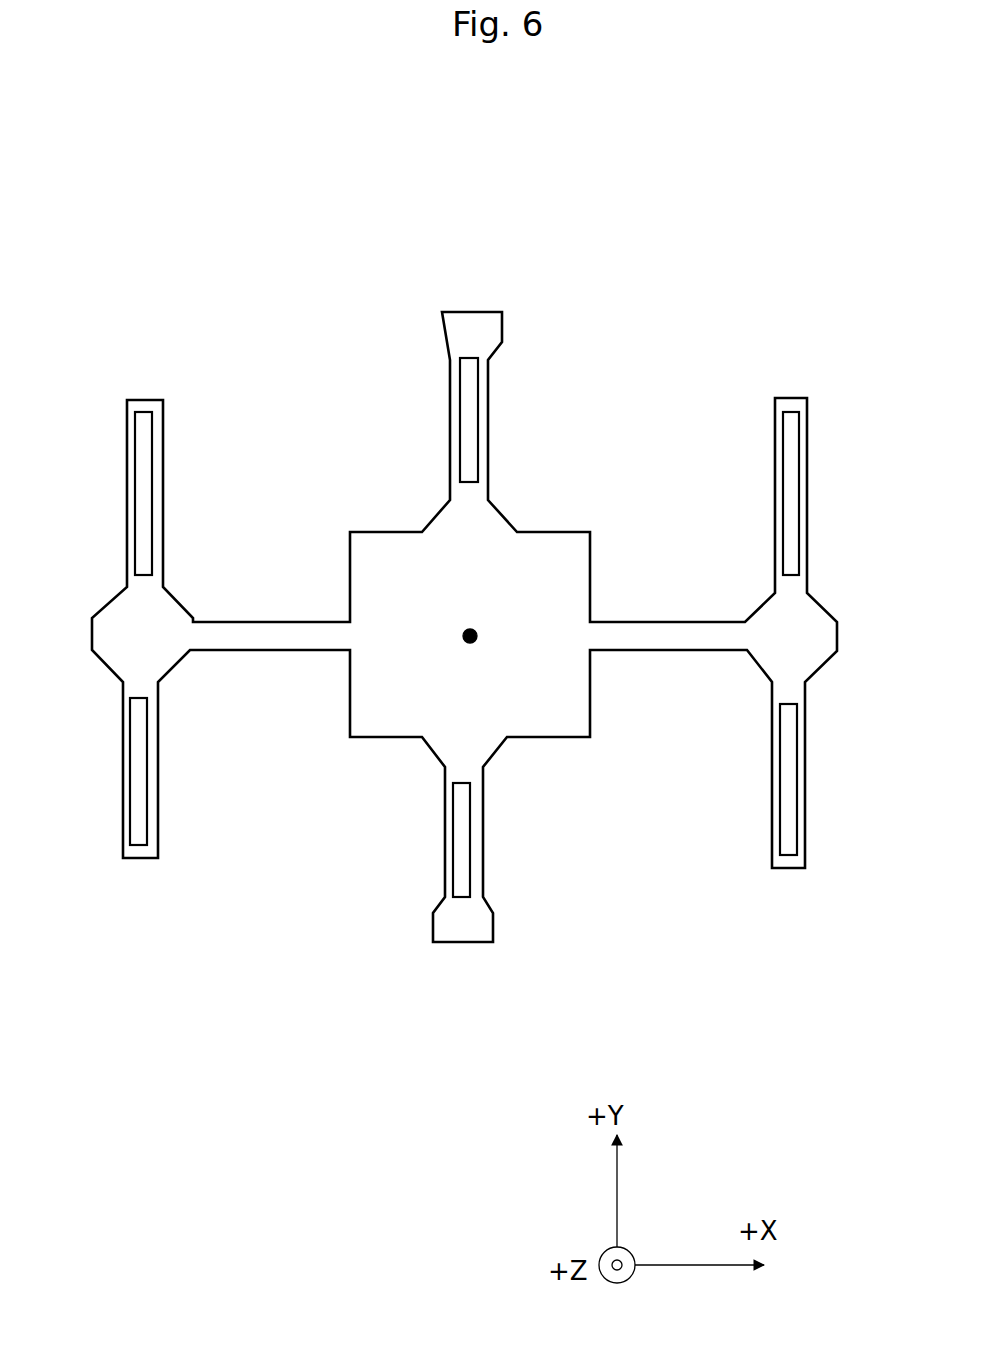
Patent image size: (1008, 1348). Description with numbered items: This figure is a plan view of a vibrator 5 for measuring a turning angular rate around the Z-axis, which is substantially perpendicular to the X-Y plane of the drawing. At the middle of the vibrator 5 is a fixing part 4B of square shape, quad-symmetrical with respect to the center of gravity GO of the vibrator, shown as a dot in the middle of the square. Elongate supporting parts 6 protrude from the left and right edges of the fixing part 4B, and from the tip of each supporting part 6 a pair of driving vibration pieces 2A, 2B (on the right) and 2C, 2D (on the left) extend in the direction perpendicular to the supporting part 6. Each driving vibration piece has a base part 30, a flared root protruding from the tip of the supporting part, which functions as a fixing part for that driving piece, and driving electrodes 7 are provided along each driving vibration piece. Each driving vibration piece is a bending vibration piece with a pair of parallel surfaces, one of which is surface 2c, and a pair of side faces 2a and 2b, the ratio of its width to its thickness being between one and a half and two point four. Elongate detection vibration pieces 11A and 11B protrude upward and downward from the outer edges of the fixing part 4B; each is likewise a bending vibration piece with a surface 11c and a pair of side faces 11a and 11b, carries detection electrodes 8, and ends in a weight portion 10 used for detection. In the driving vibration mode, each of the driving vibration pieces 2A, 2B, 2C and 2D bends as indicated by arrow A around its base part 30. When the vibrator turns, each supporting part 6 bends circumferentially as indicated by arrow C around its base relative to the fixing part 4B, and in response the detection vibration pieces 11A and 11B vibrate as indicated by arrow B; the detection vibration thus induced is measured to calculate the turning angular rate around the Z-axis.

The vibrator 5 is at (632, 350).
The fixing part 4B is at (566, 545).
The supporting part 6 is at (285, 640).
The driving electrode 7 is at (150, 437).
The detection electrode 8 is at (478, 412).
The weight portion 10 is at (472, 318).
The base part 30 is at (465, 513).
The driving vibration piece 2A is at (808, 443).
The driving vibration piece 2B is at (806, 823).
The driving vibration piece 2C is at (129, 802).
The driving vibration piece 2D is at (131, 498).
The side face 2a is at (806, 533).
The side face 2b is at (773, 528).
The surface 2c is at (776, 430).
The detection vibration piece 11A is at (493, 360).
The detection vibration piece 11B is at (483, 877).
The side face 11a is at (488, 443).
The side face 11b is at (450, 418).
The surface 11c is at (452, 378).
The center of gravity GO is at (462, 640).
The arrow A is at (169, 377).
The arrow B is at (506, 300).
The arrow C is at (224, 592).